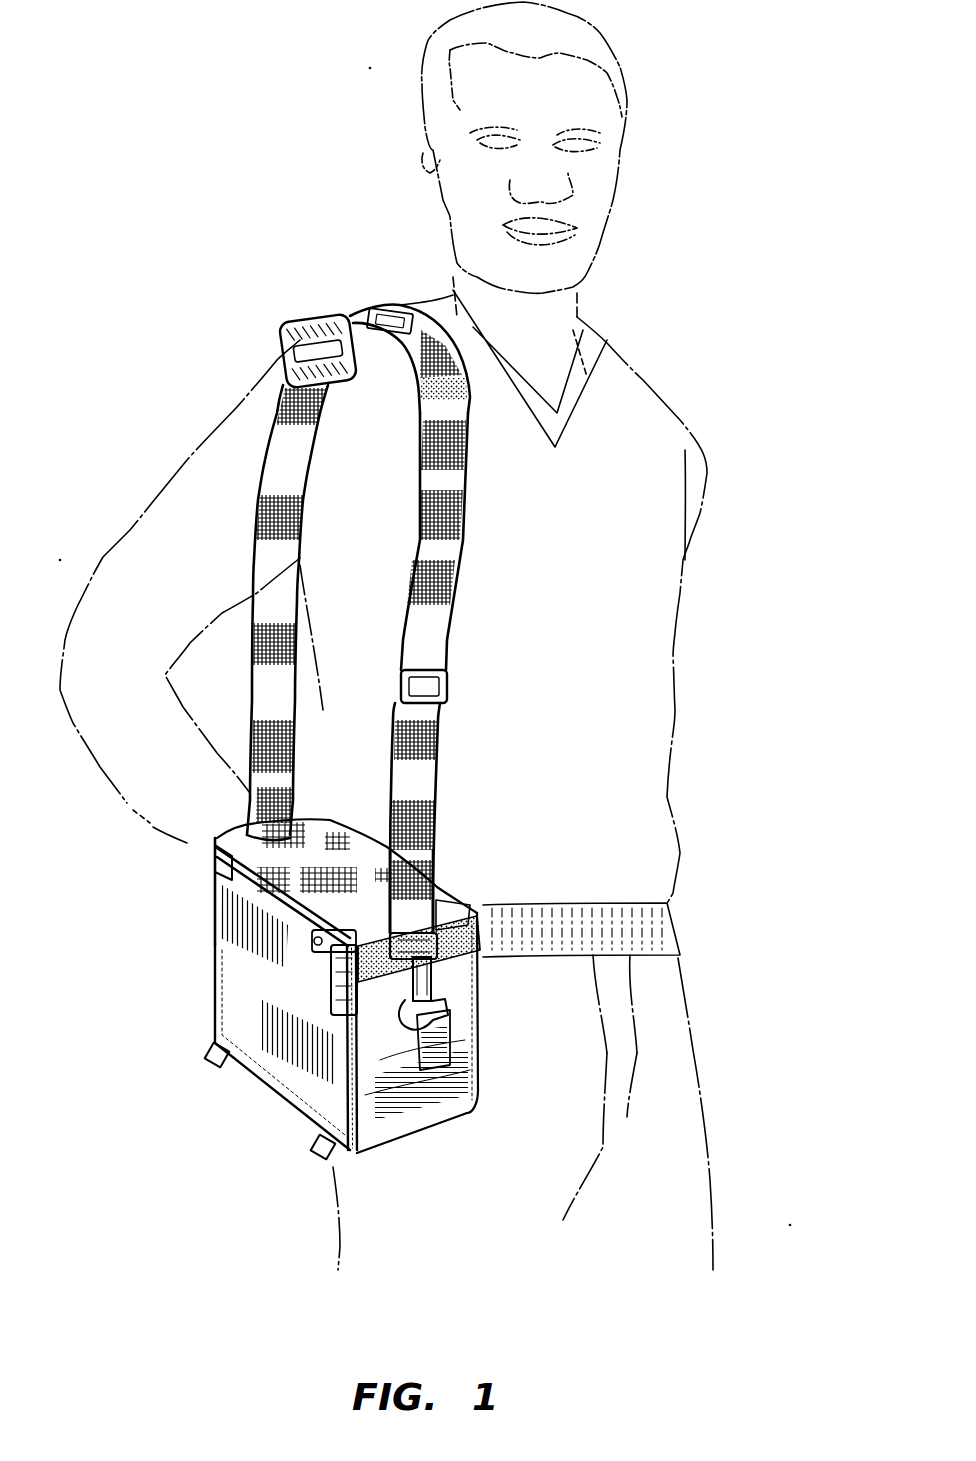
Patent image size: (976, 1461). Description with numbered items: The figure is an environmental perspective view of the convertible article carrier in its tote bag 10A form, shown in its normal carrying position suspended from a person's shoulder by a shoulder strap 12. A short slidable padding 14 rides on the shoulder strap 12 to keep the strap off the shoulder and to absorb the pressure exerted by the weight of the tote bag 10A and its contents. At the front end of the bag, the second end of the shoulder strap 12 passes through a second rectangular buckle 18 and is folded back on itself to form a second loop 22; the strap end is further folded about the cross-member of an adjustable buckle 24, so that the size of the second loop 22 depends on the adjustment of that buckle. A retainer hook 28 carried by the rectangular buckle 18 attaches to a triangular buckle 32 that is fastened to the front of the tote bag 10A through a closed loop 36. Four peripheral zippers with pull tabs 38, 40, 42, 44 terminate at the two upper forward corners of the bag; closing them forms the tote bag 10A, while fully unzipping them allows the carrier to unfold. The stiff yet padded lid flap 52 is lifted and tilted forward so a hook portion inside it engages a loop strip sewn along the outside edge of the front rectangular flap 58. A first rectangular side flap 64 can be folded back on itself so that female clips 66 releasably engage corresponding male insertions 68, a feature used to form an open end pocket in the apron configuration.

The tote bag 10A is at (200, 1100).
The shoulder strap 12 is at (458, 505).
The short slidable padding 14 is at (310, 340).
The second rectangular buckle 18 is at (470, 910).
The second loop 22 is at (390, 837).
The adjustable buckle 24 is at (450, 692).
The retainer hook 28 is at (437, 967).
The triangular buckle 32 is at (450, 1020).
The closed loop 36 is at (450, 1047).
The pull tab 38 is at (450, 890).
The pull tab 40 is at (487, 947).
The pull tab 42 is at (312, 940).
The pull tab 44 is at (330, 980).
The lid flap 52 is at (240, 830).
The front rectangular flap 58 is at (390, 1123).
The first rectangular side flap 64 is at (313, 1107).
The female clip 66 is at (215, 860).
The male insertion 68 is at (203, 1060).